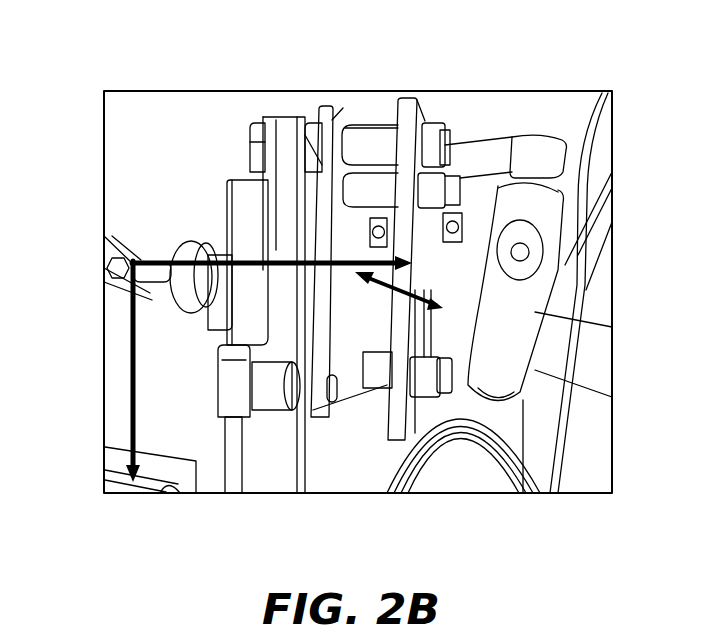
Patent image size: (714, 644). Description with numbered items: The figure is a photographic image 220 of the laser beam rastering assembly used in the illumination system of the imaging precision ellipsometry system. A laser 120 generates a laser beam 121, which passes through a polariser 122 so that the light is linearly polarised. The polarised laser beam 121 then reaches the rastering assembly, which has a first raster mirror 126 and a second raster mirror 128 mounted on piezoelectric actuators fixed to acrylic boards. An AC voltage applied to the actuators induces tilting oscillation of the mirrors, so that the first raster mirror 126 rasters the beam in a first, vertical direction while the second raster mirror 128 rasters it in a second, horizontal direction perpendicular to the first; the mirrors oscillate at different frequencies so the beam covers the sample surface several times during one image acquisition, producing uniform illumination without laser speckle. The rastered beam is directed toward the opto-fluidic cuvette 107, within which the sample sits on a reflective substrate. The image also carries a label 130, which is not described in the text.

The photographic image 220 is at (81, 81).
The polariser 122 is at (260, 247).
The opto-fluidic cuvette 107 is at (103, 250).
The base 130 is at (130, 478).
The second raster mirror 128 is at (440, 292).
The laser 120 is at (595, 348).
The first raster mirror 126 is at (365, 352).
The laser beam 121 is at (413, 447).